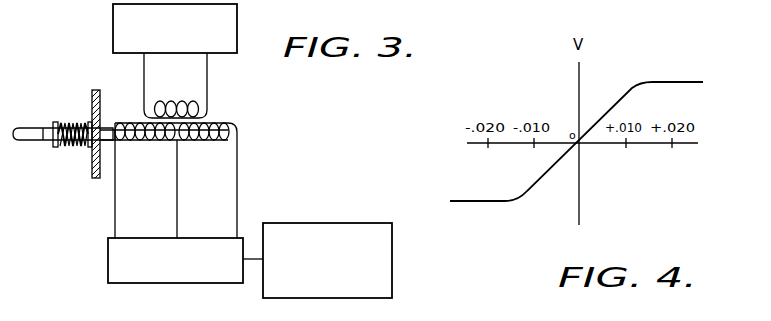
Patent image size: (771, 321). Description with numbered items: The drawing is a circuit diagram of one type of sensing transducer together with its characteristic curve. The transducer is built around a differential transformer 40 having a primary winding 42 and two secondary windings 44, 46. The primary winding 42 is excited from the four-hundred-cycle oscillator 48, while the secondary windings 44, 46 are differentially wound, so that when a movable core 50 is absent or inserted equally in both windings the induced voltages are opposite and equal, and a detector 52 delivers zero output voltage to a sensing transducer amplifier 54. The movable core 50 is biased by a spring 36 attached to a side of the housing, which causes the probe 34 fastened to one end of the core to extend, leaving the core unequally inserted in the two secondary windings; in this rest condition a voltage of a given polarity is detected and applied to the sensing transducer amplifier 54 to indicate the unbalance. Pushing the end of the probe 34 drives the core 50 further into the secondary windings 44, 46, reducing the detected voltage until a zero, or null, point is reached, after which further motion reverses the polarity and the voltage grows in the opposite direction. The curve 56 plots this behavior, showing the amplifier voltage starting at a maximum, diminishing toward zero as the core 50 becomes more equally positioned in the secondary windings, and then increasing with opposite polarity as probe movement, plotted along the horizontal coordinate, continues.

In FIG. 3, the probe 34 is at (33, 142).
In FIG. 3, the spring 36 is at (66, 122).
In FIG. 3, the differential transformer 40 is at (227, 111).
In FIG. 3, the primary winding 42 is at (162, 101).
In FIG. 3, the secondary winding 44 is at (152, 142).
In FIG. 3, the secondary winding 46 is at (221, 142).
In FIG. 3, the 400-cycle oscillator 48 is at (113, 24).
In FIG. 3, the movable core 50 is at (105, 125).
In FIG. 3, the detector 52 is at (202, 283).
In FIG. 3, the sensing transducer amplifier 54 is at (300, 223).
In FIG. 4, the characteristic curve 56 is at (537, 185).